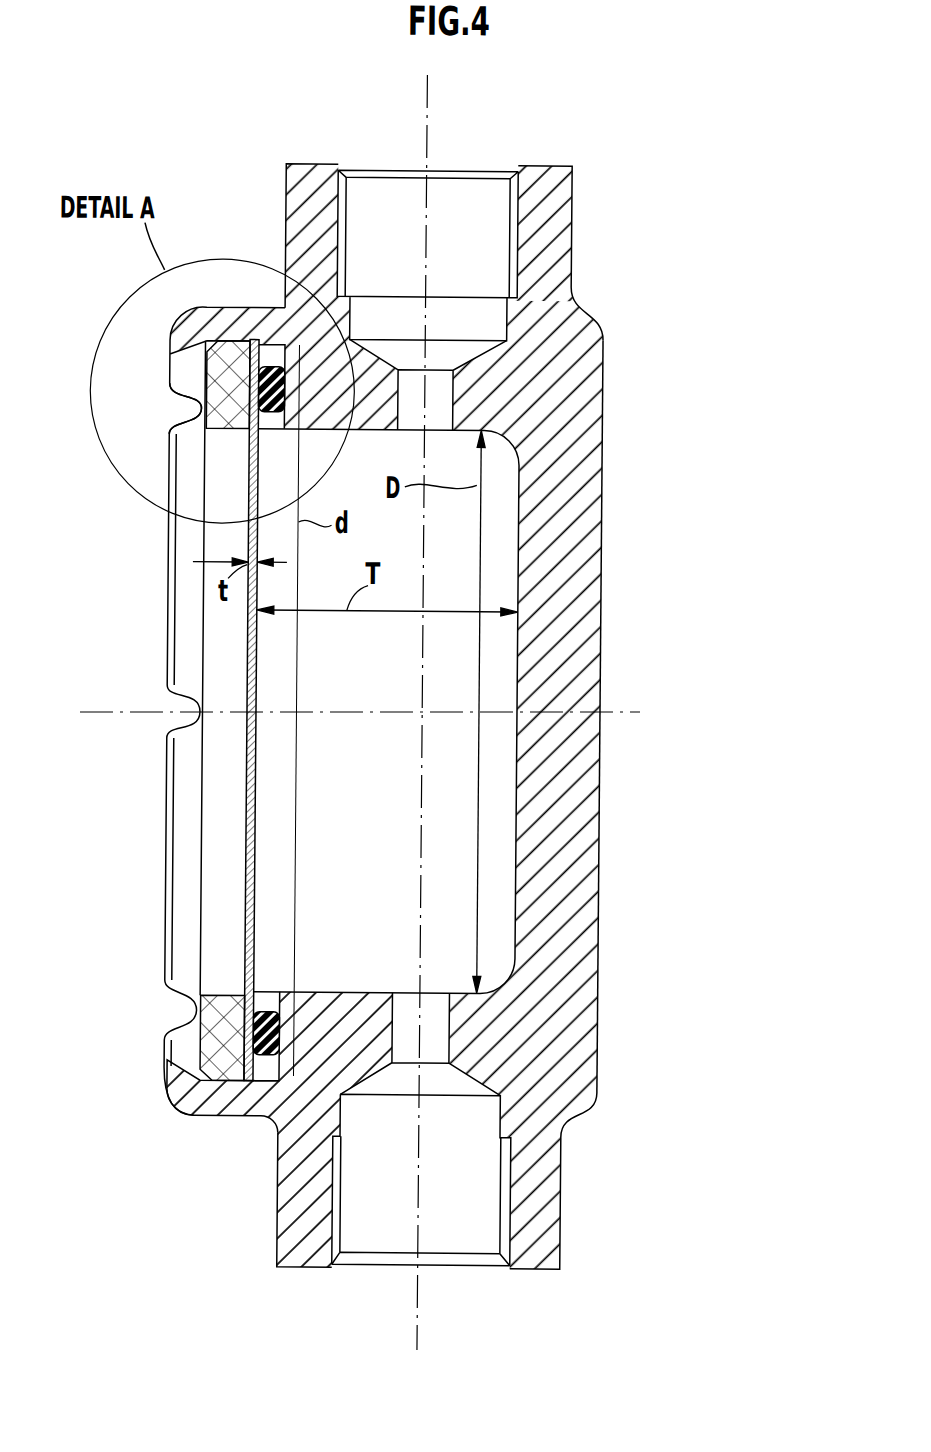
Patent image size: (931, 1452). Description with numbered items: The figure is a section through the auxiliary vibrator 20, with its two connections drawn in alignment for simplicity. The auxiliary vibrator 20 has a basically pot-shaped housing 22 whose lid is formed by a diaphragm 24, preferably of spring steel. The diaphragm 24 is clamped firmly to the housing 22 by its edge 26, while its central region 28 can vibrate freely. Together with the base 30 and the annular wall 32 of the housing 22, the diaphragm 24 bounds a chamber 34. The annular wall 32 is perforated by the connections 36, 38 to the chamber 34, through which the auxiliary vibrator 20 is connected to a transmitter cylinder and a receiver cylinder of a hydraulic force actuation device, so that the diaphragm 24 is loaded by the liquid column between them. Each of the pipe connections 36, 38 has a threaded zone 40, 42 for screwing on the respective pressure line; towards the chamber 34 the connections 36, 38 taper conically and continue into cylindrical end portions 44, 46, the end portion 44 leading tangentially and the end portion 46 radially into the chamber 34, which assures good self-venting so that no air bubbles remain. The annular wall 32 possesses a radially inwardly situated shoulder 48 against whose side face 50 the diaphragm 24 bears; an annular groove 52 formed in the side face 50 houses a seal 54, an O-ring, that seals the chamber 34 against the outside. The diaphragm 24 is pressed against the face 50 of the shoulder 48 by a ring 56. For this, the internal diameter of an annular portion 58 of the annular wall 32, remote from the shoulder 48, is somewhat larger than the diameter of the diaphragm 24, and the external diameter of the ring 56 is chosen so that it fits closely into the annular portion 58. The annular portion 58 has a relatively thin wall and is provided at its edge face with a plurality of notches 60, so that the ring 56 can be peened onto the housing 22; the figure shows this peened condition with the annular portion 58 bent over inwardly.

The auxiliary vibrator 20 is at (588, 285).
The housing 22 is at (602, 379).
The diaphragm 24 is at (247, 897).
The edge 26 is at (193, 1099).
The central region 28 is at (245, 740).
The base 30 is at (565, 654).
The annular wall 32 is at (293, 1101).
The chamber 34 is at (388, 818).
The connection 36 is at (456, 212).
The connection 38 is at (464, 1218).
The threaded zone 40 is at (340, 215).
The threaded zone 42 is at (347, 1200).
The cylindrical end portion 44 is at (440, 408).
The cylindrical end portion 46 is at (440, 1032).
The shoulder 48 is at (245, 445).
The side face 50 is at (247, 360).
The annular groove 52 is at (261, 364).
The seal 54 is at (270, 346).
The ring 56 is at (217, 1042).
The annular portion 58 is at (194, 330).
The notches 60 is at (183, 699).